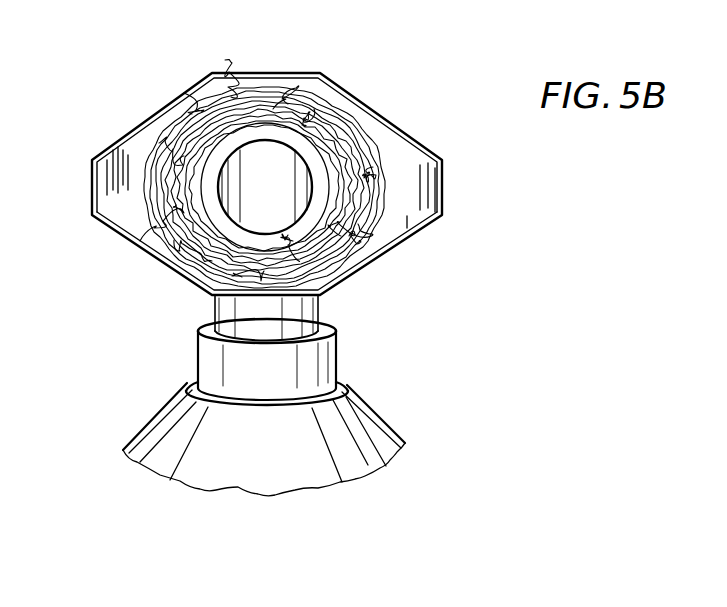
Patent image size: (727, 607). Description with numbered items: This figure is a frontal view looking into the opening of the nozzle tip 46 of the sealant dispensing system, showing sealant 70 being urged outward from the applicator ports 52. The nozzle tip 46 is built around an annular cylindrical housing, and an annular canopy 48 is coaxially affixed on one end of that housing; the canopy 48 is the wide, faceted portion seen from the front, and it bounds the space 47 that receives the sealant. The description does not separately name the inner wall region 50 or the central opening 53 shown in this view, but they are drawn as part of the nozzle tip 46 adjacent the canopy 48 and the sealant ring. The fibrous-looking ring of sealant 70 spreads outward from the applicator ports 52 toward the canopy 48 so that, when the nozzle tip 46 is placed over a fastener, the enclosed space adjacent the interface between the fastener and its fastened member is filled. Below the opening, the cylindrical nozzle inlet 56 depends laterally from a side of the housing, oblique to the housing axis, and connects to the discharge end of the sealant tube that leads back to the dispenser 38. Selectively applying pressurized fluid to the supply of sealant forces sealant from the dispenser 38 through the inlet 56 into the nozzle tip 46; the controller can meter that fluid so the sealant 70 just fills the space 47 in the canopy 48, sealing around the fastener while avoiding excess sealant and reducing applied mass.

The dispenser 38 is at (388, 429).
The nozzle tip 46 is at (399, 106).
The space 47 is at (174, 84).
The annular canopy 48 is at (130, 135).
The inner wall 50 is at (130, 214).
The applicator ports 52 is at (277, 103).
The central bore 53 is at (287, 160).
The nozzle inlet 56 is at (323, 352).
The sealant 70 is at (370, 218).